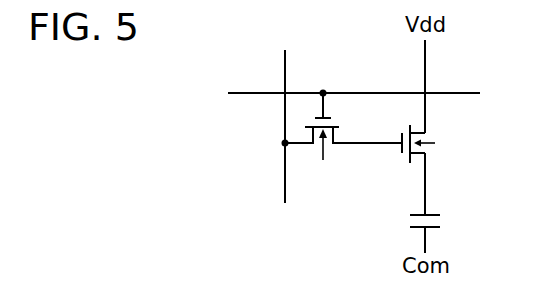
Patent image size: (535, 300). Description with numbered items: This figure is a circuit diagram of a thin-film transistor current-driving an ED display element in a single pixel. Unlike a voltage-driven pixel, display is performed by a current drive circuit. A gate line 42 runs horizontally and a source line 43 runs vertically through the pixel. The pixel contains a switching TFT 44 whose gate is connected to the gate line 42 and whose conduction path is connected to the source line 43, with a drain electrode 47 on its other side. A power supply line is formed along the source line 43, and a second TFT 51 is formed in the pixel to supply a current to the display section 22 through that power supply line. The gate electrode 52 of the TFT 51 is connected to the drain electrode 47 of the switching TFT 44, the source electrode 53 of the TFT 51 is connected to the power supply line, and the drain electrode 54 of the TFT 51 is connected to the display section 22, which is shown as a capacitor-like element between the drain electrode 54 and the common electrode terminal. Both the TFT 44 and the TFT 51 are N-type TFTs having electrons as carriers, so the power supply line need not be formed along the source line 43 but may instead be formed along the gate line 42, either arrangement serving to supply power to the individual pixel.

The gate line 42 is at (340, 93).
The source line 43 is at (286, 113).
The TFT 44 is at (343, 134).
The drain electrode 47 is at (335, 133).
The TFT 51 is at (433, 144).
The gate electrode 52 is at (397, 147).
The source electrode 53 is at (417, 128).
The drain electrode 54 is at (415, 155).
The ED display section 22 is at (442, 221).